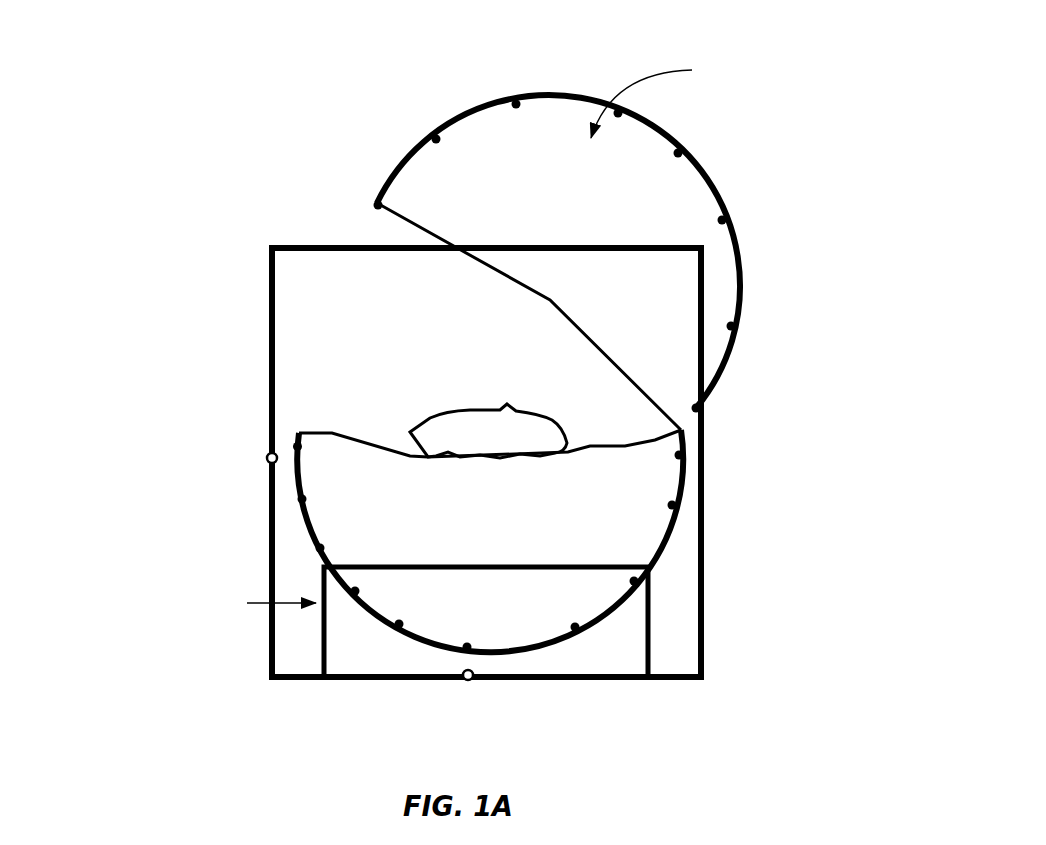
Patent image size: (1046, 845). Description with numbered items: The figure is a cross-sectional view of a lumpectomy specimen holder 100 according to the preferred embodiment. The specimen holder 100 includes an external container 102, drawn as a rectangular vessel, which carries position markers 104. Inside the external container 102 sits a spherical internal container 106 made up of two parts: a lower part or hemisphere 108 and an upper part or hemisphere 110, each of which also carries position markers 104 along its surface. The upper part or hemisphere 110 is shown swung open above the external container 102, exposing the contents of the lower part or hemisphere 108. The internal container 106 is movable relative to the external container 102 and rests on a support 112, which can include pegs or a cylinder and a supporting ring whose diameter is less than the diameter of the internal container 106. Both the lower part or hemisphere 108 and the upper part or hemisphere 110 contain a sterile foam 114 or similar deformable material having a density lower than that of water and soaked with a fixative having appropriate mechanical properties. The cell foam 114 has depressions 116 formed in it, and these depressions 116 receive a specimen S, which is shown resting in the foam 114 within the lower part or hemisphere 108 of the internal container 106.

The lumpectomy specimen holder 100 is at (340, 769).
The external container 102 is at (370, 688).
The position markers 104 is at (291, 440).
The spherical internal container 106 is at (681, 496).
The lower part or hemisphere 108 is at (603, 620).
The upper part or hemisphere 110 is at (381, 173).
The support 112 is at (334, 609).
The sterile foam 114 is at (423, 233).
The depressions 116 is at (550, 300).
The specimen S is at (503, 409).